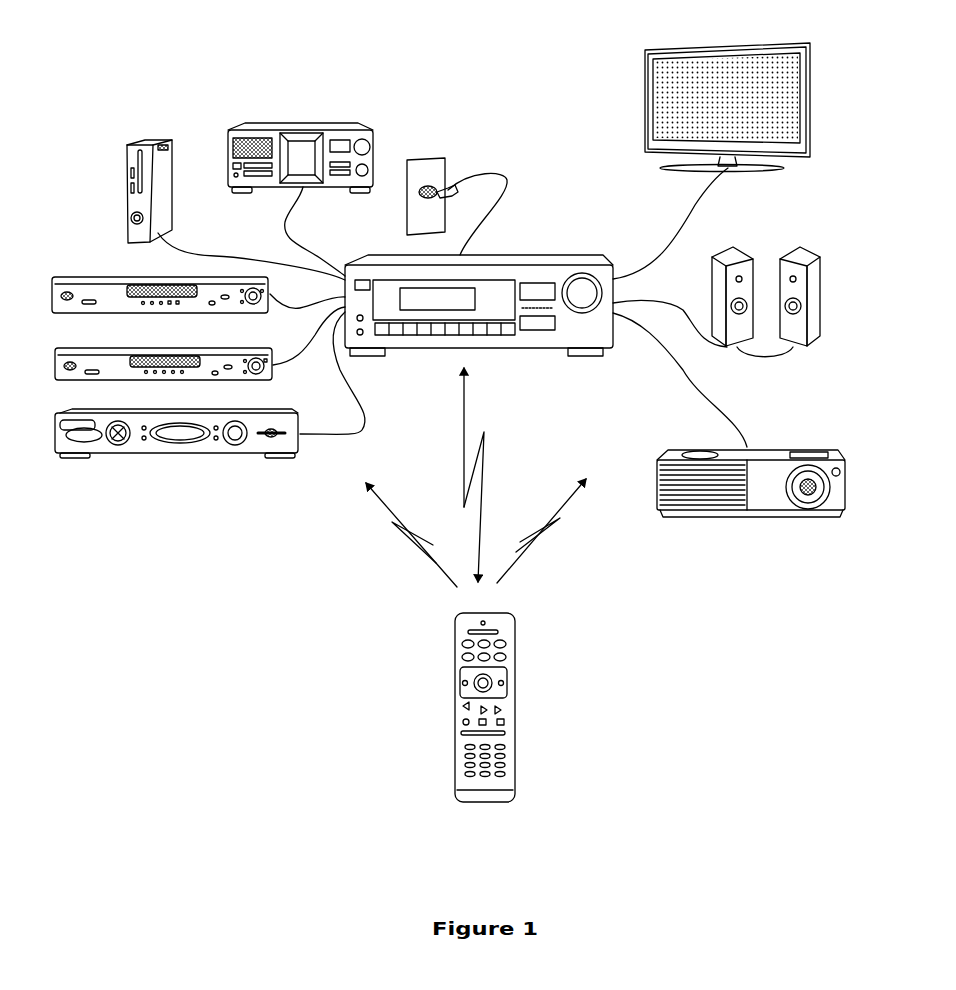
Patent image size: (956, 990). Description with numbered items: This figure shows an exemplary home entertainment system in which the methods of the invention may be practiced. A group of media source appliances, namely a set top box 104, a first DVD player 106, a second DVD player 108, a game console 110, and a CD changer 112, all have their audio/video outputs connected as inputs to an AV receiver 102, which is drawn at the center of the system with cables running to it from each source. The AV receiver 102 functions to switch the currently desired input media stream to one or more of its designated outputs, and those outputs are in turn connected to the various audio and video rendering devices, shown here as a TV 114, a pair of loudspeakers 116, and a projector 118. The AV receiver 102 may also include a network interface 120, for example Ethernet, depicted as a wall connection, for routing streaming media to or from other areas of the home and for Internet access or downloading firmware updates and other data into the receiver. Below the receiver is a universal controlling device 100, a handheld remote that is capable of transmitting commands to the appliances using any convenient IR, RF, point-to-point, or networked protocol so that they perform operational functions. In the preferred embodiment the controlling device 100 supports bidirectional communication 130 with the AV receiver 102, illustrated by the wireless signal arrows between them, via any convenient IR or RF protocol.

The universal controlling device 100 is at (517, 755).
The AV receiver 102 is at (543, 255).
The set top box 104 is at (157, 455).
The first DVD player 106 is at (98, 348).
The second DVD player 108 is at (100, 277).
The game console 110 is at (127, 146).
The CD changer 112 is at (282, 122).
The TV 114 is at (727, 45).
The loudspeakers 116 is at (743, 252).
The projector 118 is at (775, 452).
The network interface 120 is at (455, 185).
The bidirectional communication 130 is at (464, 403).